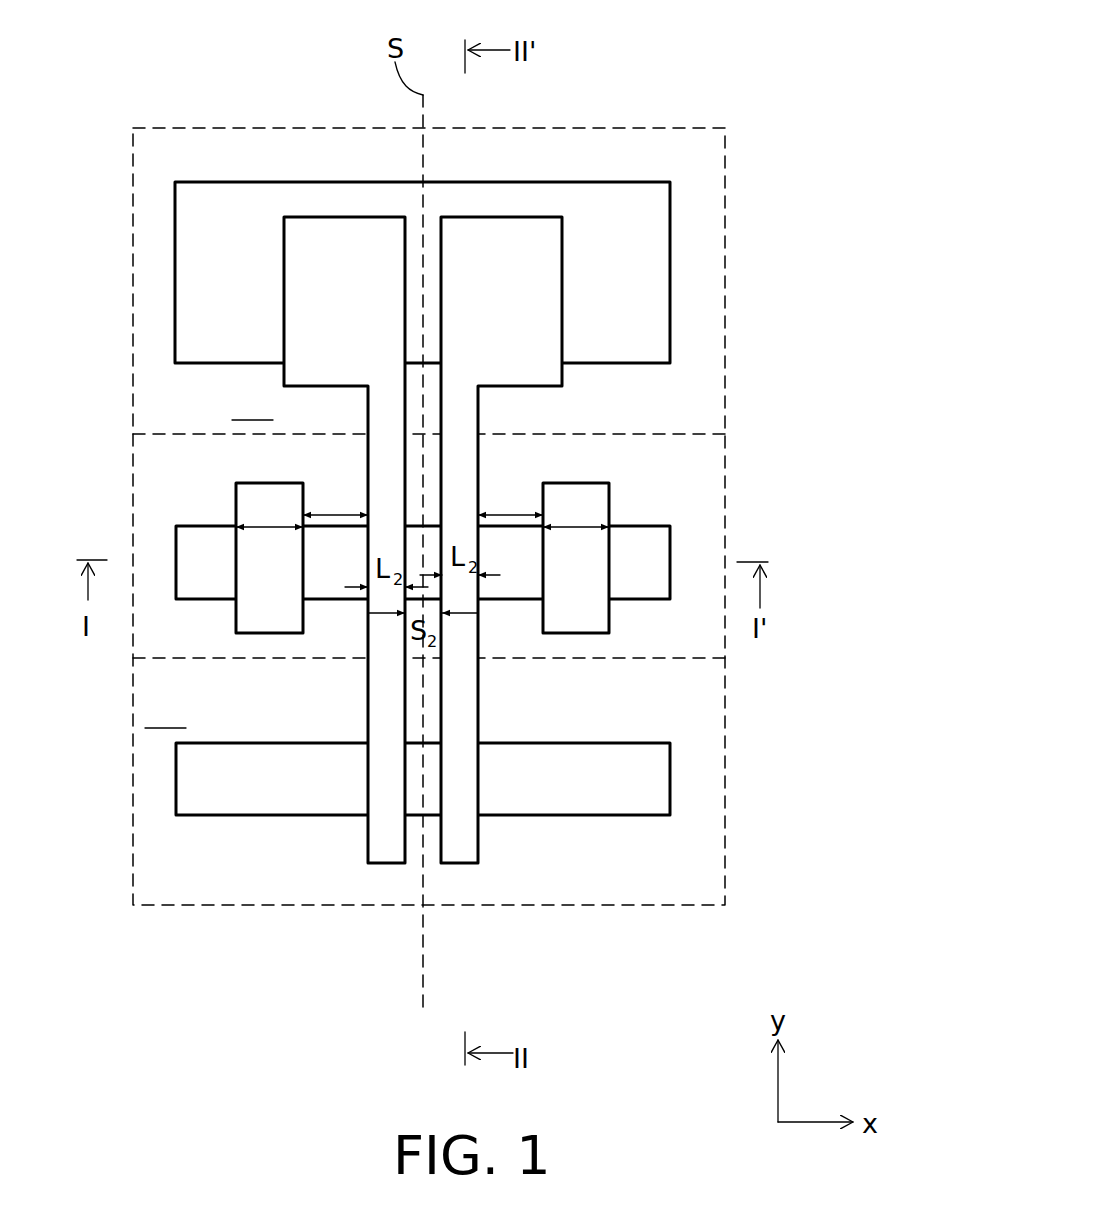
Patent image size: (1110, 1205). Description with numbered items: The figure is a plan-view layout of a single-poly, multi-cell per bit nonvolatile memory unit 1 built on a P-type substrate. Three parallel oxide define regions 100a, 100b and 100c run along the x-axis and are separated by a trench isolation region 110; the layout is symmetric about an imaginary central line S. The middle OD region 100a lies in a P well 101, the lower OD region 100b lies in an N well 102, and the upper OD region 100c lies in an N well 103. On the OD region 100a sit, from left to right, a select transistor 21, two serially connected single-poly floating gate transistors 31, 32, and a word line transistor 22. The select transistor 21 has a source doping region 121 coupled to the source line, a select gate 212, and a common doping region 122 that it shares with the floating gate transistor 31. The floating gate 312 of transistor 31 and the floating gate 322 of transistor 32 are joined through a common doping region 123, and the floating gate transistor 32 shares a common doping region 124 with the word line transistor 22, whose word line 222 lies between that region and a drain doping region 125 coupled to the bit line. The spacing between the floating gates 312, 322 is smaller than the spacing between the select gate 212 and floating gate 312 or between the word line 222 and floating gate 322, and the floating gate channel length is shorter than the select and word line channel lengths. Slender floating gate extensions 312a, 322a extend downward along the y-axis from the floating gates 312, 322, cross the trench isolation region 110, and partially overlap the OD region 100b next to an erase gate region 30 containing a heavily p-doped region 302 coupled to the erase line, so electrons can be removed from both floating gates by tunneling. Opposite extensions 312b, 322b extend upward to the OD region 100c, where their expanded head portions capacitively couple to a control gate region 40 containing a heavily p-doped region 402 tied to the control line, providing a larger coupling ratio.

The single-poly, multi-cell per bit nonvolatile memory unit 1 is at (723, 63).
The control gate region 40 is at (203, 170).
The heavily doped region 402 is at (185, 259).
The ion well 103 is at (725, 186).
The oxide define region 100c is at (670, 314).
The ion well 101 is at (725, 470).
The ion well 102 is at (725, 752).
The trench isolation region 110 is at (432, 433).
The select transistor 21 is at (221, 484).
The word line transistor 22 is at (622, 488).
The floating gate transistor 31 is at (361, 501).
The floating gate transistor 32 is at (485, 501).
The oxide define region 100a is at (670, 531).
The oxide define region 100b is at (670, 791).
The source doping region 121 is at (222, 601).
The common doping region 122 is at (315, 601).
The common doping region 123 is at (413, 530).
The common doping region 124 is at (527, 601).
The drain doping region 125 is at (625, 601).
The select gate 212 is at (270, 623).
The word line 222 is at (577, 623).
The erase gate region 30 is at (650, 822).
The heavily doped region 302 is at (203, 797).
The floating gate 312 is at (385, 849).
The floating gate extension 312a is at (362, 784).
The floating gate extension 312b is at (344, 200).
The floating gate 322 is at (459, 849).
The floating gate extension 322a is at (484, 784).
The floating gate extension 322b is at (501, 195).